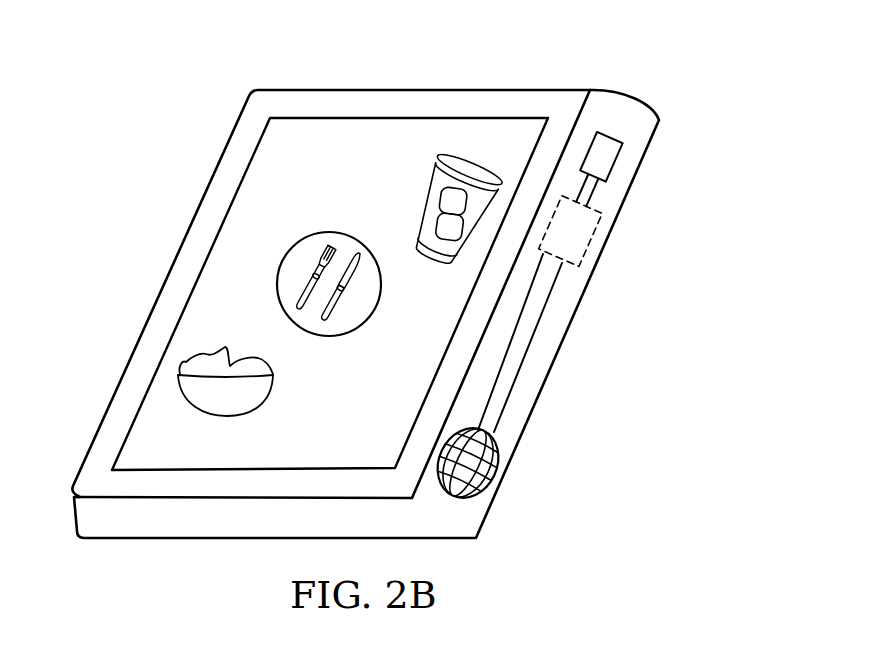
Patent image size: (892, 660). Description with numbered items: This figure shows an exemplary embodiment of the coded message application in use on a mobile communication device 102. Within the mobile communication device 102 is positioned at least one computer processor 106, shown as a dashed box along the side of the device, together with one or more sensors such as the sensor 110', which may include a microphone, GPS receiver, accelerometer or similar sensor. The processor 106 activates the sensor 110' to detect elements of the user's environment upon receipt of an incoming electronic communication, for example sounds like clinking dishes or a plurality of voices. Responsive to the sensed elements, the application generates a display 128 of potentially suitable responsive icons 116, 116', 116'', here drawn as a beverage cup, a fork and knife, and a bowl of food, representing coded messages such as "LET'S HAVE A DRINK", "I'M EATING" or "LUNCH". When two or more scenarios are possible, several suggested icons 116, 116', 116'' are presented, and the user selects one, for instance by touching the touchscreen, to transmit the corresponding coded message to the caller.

The mobile communication device 102 is at (558, 57).
The display 128 is at (213, 233).
The icon 116 is at (559, 205).
The icon 116' is at (465, 298).
The food bowl item indicator 116'' is at (404, 387).
The computer processor 106 is at (598, 232).
The sensor 110' is at (516, 464).